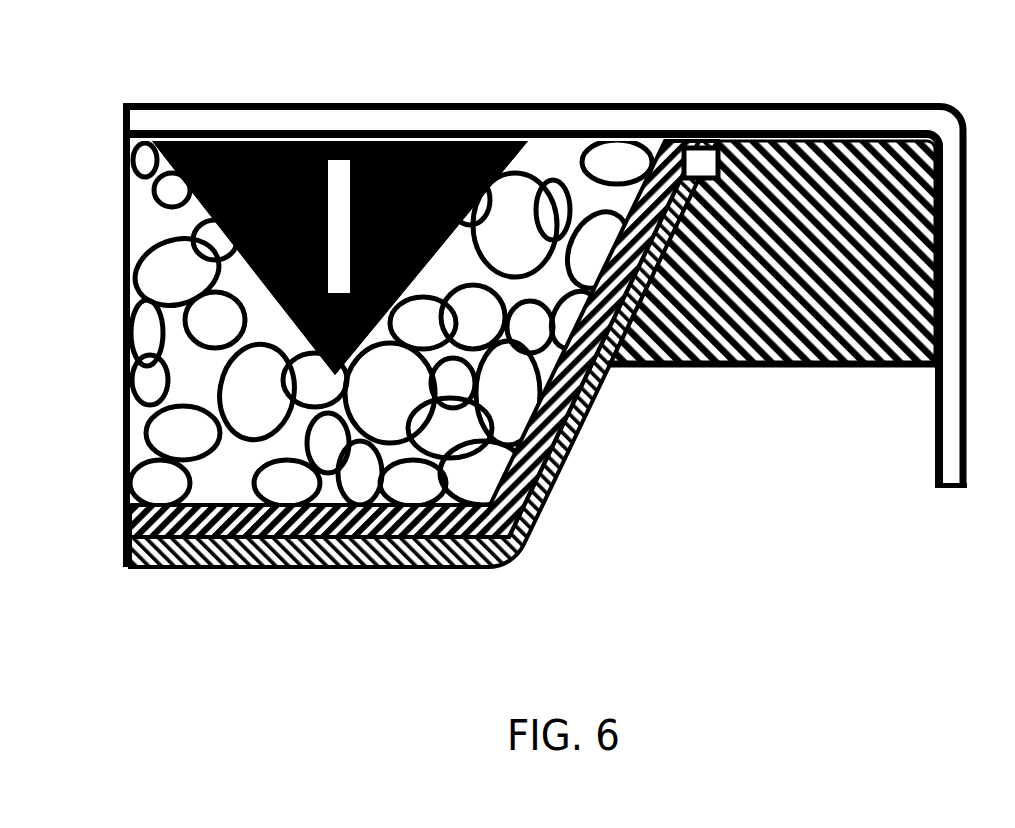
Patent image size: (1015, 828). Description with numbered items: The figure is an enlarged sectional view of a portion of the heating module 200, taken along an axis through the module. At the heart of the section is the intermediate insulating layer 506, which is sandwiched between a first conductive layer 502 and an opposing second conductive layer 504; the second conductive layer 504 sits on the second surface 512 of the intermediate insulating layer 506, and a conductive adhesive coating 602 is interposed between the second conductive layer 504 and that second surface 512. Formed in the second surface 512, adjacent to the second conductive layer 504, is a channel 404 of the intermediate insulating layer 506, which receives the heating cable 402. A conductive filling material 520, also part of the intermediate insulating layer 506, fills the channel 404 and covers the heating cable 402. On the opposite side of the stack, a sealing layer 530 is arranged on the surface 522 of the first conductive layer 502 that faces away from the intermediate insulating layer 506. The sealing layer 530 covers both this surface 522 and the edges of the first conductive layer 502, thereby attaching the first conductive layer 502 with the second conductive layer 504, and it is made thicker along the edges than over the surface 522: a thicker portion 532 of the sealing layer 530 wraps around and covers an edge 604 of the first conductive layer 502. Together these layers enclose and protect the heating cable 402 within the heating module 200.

The heating module 200 is at (924, 66).
The heating cable 402 is at (347, 170).
The channel 404 is at (237, 255).
The first conductive layer 502 is at (542, 445).
The second conductive layer 504 is at (478, 117).
The intermediate insulating layer 506 is at (610, 160).
The second surface 512 is at (547, 135).
The conductive filling material 520 is at (241, 152).
The surface 522 is at (513, 530).
The sealing layer 530 is at (320, 553).
The thicker portion 532 is at (770, 340).
The conductive adhesive coating 602 is at (316, 145).
The edge 604 is at (710, 140).